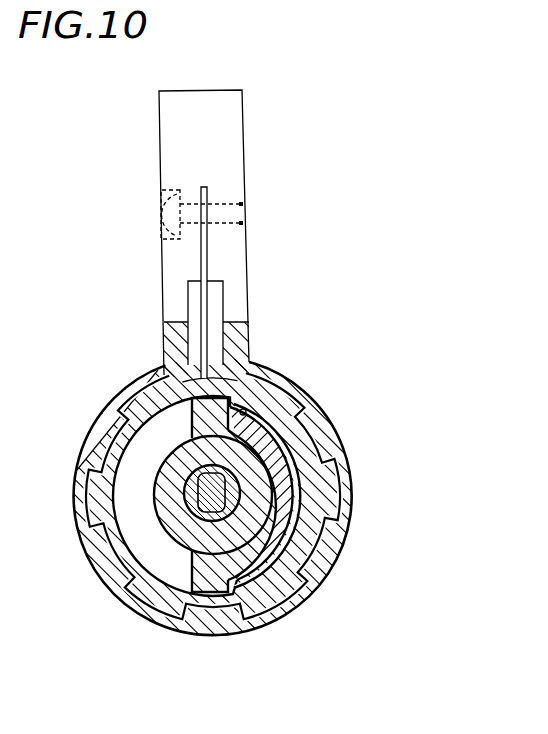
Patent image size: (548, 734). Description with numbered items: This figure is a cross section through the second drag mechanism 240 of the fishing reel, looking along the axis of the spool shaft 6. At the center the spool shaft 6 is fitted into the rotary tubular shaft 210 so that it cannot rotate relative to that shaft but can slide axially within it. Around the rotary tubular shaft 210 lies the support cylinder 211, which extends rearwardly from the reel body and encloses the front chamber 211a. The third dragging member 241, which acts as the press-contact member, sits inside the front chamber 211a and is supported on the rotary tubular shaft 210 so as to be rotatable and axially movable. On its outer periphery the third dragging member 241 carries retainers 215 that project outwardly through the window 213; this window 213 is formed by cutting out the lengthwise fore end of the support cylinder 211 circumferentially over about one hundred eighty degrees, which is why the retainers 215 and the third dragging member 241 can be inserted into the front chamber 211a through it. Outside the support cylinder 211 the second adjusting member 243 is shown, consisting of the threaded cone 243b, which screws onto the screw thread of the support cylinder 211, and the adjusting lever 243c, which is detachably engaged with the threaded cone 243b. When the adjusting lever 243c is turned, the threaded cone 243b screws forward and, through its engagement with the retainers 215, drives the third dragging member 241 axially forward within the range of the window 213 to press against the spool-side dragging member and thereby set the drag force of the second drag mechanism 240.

The second drag mechanism 240 is at (148, 280).
The rotary tubular shaft 210 is at (300, 577).
The third dragging member 241 is at (290, 440).
The support cylinder 211 is at (282, 460).
The front chamber 211a is at (271, 485).
The spool shaft 6 is at (222, 497).
The window 213 is at (246, 410).
The retainers 215 is at (207, 395).
The second adjusting member 243 is at (250, 255).
The threaded cone 243b is at (282, 398).
The adjusting lever 243c is at (232, 157).